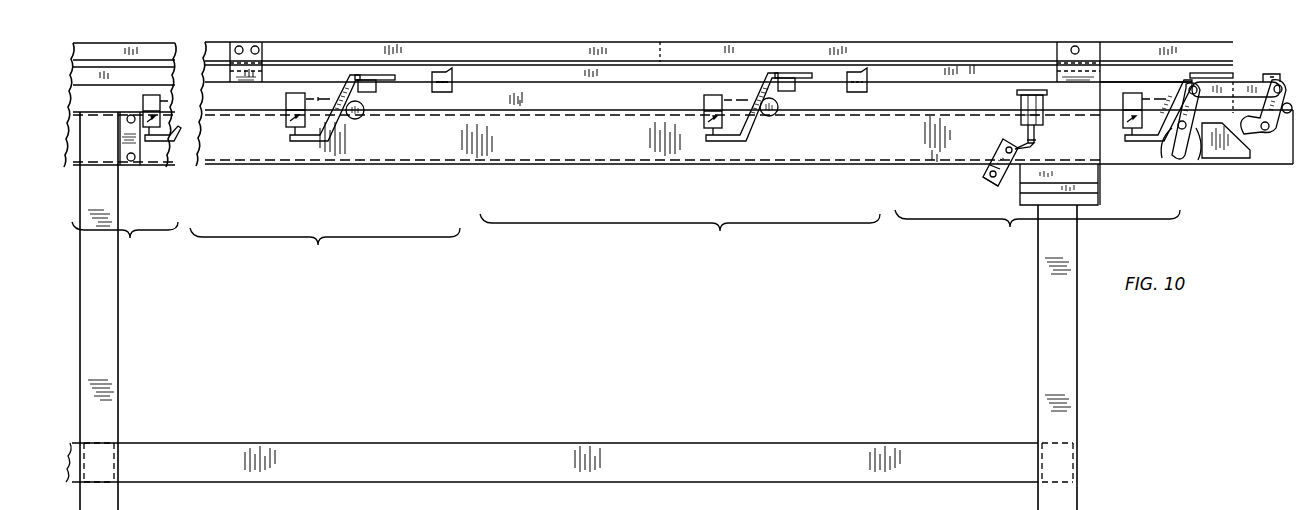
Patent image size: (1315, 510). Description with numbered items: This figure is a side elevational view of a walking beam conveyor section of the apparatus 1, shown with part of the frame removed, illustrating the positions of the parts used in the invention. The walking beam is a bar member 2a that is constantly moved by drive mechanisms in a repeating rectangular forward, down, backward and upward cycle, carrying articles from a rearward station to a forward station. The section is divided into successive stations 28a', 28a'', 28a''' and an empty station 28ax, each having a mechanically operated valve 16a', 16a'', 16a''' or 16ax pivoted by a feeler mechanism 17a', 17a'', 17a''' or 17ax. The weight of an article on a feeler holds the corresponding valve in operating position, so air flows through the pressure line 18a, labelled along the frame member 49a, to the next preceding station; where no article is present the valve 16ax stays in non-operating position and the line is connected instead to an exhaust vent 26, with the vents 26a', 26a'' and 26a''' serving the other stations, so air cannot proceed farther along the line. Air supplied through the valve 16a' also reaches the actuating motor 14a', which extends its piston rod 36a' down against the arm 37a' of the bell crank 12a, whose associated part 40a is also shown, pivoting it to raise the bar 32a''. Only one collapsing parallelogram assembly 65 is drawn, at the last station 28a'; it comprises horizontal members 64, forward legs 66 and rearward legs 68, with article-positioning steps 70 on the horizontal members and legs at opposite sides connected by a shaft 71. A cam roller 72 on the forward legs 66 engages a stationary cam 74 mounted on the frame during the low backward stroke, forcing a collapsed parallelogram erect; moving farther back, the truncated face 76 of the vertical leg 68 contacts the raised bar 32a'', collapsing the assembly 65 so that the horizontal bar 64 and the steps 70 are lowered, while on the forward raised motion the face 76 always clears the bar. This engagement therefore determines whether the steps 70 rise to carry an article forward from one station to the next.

The storage and retrieval system frame 1 is at (203, 46).
The bar member (walking beam) 2a is at (207, 168).
The bell crank 12a is at (993, 156).
The actuating motor 14a' is at (1008, 106).
The mechanically operated valve 16ax is at (135, 107).
The mechanically operated valve 16a''' is at (276, 111).
The mechanically operated valve 16a'' is at (693, 111).
The mechanically operated valve 16a' is at (1128, 101).
The feeler mechanism 17ax is at (176, 160).
The feeler mechanism 17a''' is at (371, 112).
The feeler mechanism 17a'' is at (786, 112).
The feeler mechanism 17a' is at (1161, 104).
The pressure line 18a is at (218, 120).
The exhaust outlet or vent 26 is at (163, 101).
The exhaust vent 26a''' is at (336, 58).
The exhaust vent 26a'' is at (748, 58).
The exhaust vent 26a' is at (1142, 56).
The empty station 28ax is at (125, 244).
The station 28a''' is at (325, 253).
The station 28a'' is at (680, 240).
The last station 28a' is at (1037, 235).
The bar of bell crank assembly 32a'' is at (1000, 187).
The piston rod 36a' is at (1058, 129).
The arm 37a' is at (1051, 151).
The plate 40a is at (985, 178).
The lower rail 49a is at (652, 107).
The horizontal members 64 is at (1242, 82).
The collapsing parallelogram assembly 65 is at (1283, 120).
The forward legs 66 is at (1282, 92).
The rearward legs 68 is at (1190, 155).
The article-positioning steps 70 is at (778, 72).
The shaft 71 is at (1298, 118).
The cam roller 72 is at (1258, 140).
The stationary cam 74 is at (1222, 152).
The truncated face 76 is at (1170, 150).